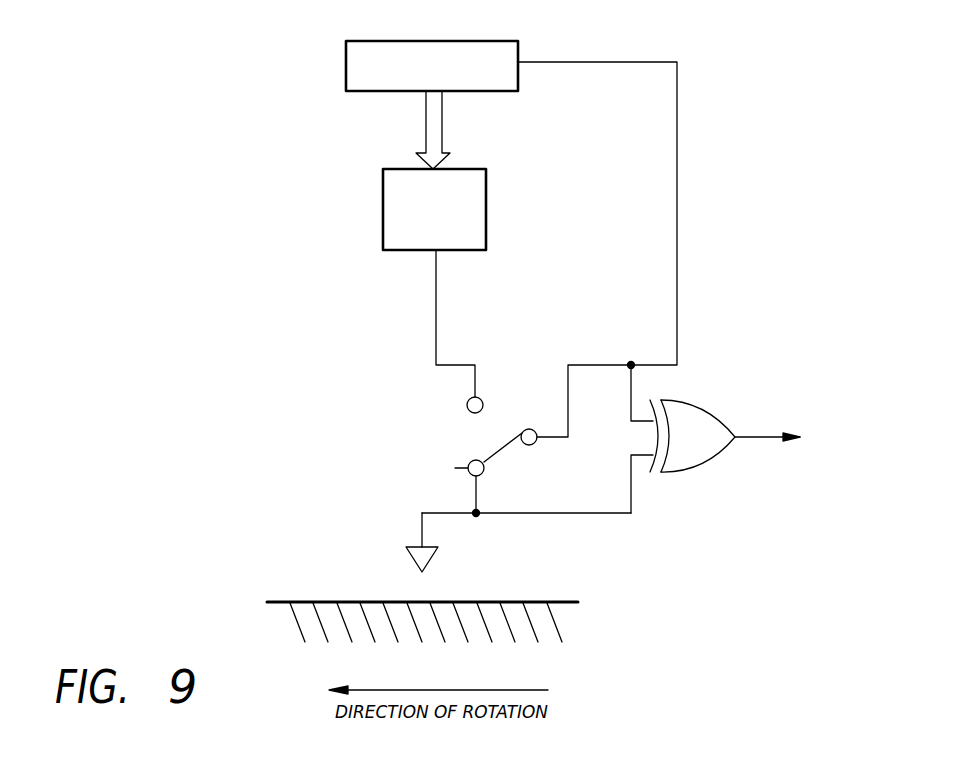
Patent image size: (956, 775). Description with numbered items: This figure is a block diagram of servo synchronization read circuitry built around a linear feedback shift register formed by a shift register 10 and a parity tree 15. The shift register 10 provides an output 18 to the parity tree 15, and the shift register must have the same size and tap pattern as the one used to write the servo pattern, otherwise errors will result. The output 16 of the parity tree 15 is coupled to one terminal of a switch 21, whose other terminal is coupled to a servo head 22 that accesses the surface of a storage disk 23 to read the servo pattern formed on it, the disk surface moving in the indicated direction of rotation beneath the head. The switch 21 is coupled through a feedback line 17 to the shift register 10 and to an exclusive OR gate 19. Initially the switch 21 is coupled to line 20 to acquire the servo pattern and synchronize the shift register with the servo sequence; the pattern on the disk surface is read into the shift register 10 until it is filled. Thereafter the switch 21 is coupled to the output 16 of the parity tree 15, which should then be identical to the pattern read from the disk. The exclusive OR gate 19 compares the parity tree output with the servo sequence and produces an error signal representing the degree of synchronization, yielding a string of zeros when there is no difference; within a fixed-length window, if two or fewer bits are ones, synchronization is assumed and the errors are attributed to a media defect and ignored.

The shift register 10 is at (346, 57).
The parity tree 15 is at (487, 215).
The output of parity tree 16 is at (472, 382).
The feedback line 17 is at (678, 302).
The output of shift register 18 is at (442, 128).
The exclusive OR gate 19 is at (700, 462).
The acquire line 20 is at (475, 492).
The switch 21 is at (547, 455).
The servo head 22 is at (412, 560).
The storage disk 23 is at (542, 600).